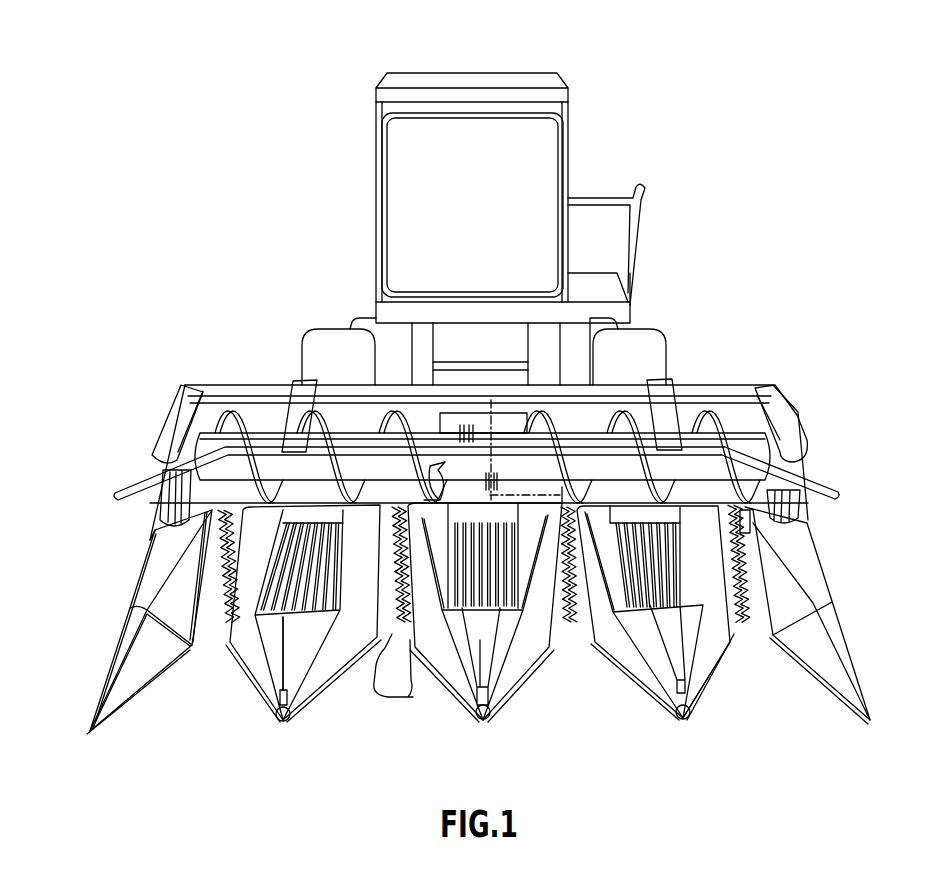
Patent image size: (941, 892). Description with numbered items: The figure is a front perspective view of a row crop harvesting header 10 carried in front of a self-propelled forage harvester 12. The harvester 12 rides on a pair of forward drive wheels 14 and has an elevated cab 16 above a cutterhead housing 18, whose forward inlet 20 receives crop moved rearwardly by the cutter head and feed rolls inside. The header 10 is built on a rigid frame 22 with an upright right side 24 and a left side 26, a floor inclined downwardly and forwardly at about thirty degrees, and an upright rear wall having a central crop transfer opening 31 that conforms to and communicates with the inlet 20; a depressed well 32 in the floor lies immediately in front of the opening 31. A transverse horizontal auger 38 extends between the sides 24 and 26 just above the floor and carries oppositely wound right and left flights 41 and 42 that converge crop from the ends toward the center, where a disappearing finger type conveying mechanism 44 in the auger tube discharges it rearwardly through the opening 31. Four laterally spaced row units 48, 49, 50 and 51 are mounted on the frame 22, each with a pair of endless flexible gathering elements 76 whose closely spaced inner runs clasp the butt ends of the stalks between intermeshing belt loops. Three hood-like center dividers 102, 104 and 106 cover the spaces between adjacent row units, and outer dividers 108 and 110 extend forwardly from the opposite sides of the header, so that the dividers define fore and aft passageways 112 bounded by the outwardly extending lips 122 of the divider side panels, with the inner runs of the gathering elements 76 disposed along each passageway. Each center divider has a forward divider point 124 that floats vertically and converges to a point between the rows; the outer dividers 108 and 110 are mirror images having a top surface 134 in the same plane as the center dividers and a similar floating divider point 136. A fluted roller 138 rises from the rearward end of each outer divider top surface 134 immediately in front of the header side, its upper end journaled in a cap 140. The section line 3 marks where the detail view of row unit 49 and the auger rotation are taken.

The section line 3- 3 is at (491, 387).
The row crop harvesting header 10 is at (797, 405).
The self-propelled forage harvester 12 is at (358, 298).
The forward drive wheels 14 is at (313, 343).
The elevated cab 16 is at (600, 140).
The cutterhead housing 18 is at (450, 378).
The forward inlet 20 is at (518, 420).
The rigid frame 22 is at (728, 382).
The upright right side 24 is at (178, 441).
The left side 26 is at (775, 440).
The central crop transfer opening 31 is at (445, 420).
The depressed area or well 32 is at (418, 488).
The transverse horizontal auger 38 is at (260, 440).
The right flight 41 is at (372, 435).
The left flight 42 is at (658, 497).
The disappearing finger type conveying mechanism 44 is at (498, 478).
The row unit 48 is at (750, 632).
The row unit 49 is at (581, 633).
The row unit 50 is at (395, 637).
The row unit 51 is at (213, 640).
The endless flexible gathering elements 76 is at (405, 670).
The center divider 102 is at (713, 685).
The center divider 104 is at (518, 697).
The center divider 106 is at (308, 702).
The outer divider 108 is at (148, 697).
The outer divider 110 is at (862, 667).
The fore and aft passageways 112 is at (218, 590).
The hood side panel 122 is at (553, 623).
The divider point or forward portion 124 is at (330, 676).
The top surface 134 is at (155, 557).
The floating divider point 136 is at (135, 662).
The fluted roller 138 is at (170, 503).
The cap 140 is at (168, 452).